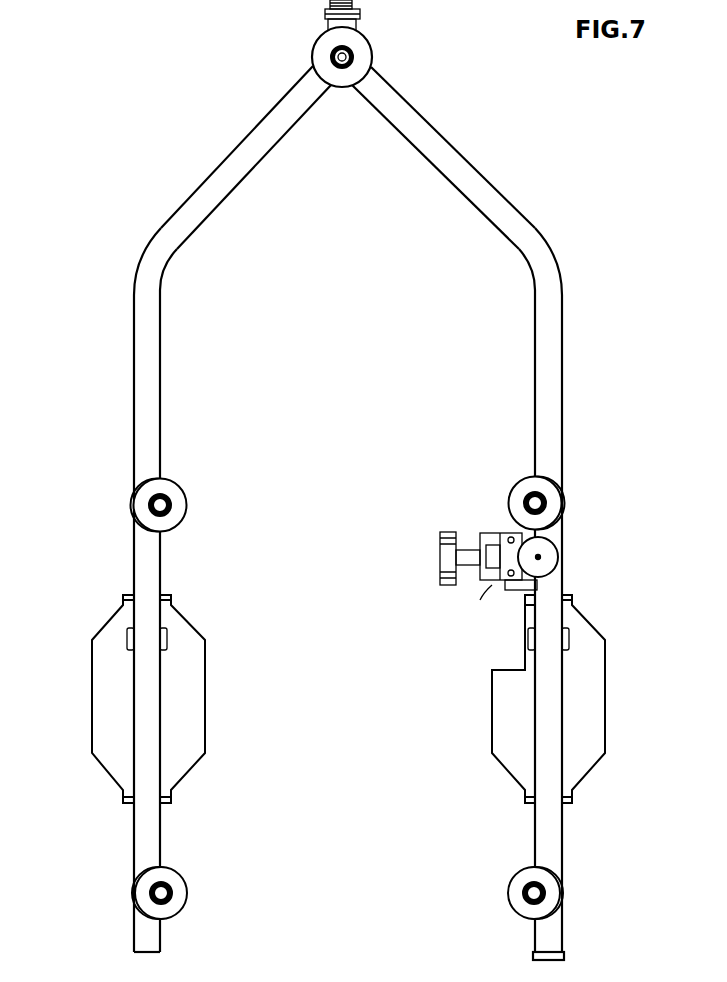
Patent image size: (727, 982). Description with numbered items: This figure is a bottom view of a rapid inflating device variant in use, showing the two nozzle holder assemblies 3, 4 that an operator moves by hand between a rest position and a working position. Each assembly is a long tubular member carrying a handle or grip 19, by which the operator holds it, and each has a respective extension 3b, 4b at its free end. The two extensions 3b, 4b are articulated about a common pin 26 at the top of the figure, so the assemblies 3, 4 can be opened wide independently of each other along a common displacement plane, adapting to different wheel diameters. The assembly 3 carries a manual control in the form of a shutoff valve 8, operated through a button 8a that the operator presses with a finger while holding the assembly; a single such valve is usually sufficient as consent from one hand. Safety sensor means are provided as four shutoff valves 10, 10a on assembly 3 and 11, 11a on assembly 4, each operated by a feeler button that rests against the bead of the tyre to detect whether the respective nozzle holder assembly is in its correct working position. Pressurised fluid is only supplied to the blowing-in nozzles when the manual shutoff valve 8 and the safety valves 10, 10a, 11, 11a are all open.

The nozzle holder assembly 3 is at (552, 432).
The nozzle holder assembly 4 is at (140, 432).
The extension 3b is at (430, 132).
The extension 4b is at (252, 140).
The common pin 26 is at (353, 55).
The shutoff valve 11a is at (180, 498).
The shutoff valve 10a is at (515, 495).
The shutoff valve 11 is at (188, 893).
The shutoff valve 10 is at (510, 897).
The shutoff valve 8 is at (487, 577).
The button 8a is at (555, 557).
The handle or grip 19 is at (92, 707).